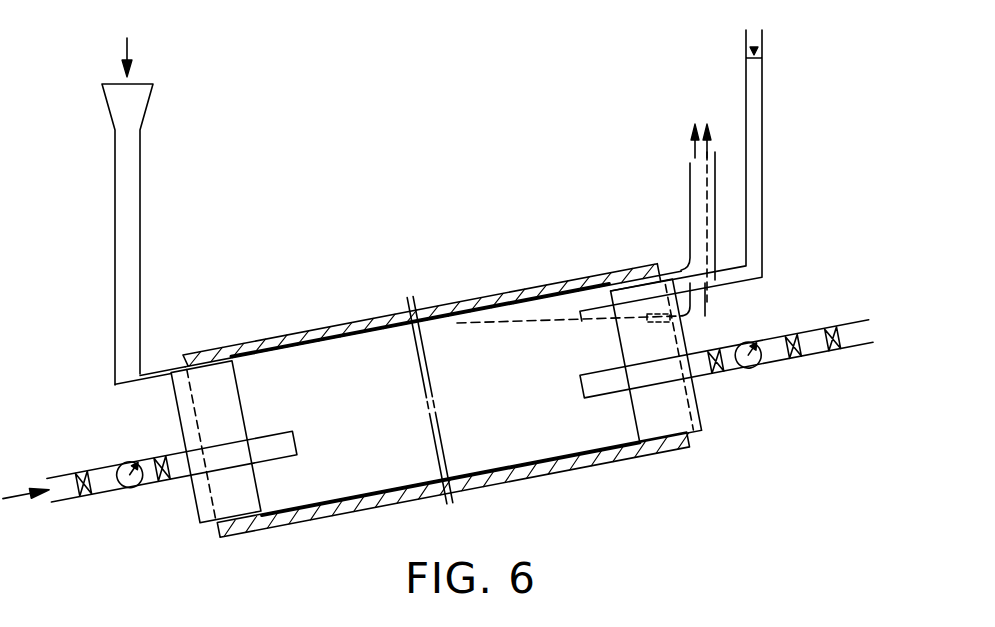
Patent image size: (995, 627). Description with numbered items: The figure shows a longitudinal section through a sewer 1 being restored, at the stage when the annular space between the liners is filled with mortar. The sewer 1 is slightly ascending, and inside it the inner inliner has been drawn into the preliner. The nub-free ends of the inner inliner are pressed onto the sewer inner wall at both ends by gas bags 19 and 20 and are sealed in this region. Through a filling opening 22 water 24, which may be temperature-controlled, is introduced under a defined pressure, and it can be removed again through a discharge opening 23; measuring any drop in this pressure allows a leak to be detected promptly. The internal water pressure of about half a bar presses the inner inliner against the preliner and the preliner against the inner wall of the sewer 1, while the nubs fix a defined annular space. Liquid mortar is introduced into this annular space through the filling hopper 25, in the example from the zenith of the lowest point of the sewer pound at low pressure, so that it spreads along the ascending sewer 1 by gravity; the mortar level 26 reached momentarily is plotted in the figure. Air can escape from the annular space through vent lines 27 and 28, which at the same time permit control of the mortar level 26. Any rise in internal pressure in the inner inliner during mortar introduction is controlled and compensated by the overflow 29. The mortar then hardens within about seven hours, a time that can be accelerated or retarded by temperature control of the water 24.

The sewer 1 is at (507, 478).
The gas bag 19 is at (204, 521).
The gas bag 20 is at (697, 422).
The filling opening 22 is at (110, 480).
The discharge opening 23 is at (770, 350).
The water 24 is at (488, 408).
The filling hopper 25 is at (134, 100).
The mortar level 26 is at (552, 318).
The vent line 27 is at (691, 176).
The vent line 28 is at (715, 210).
The overflow 29 is at (753, 80).